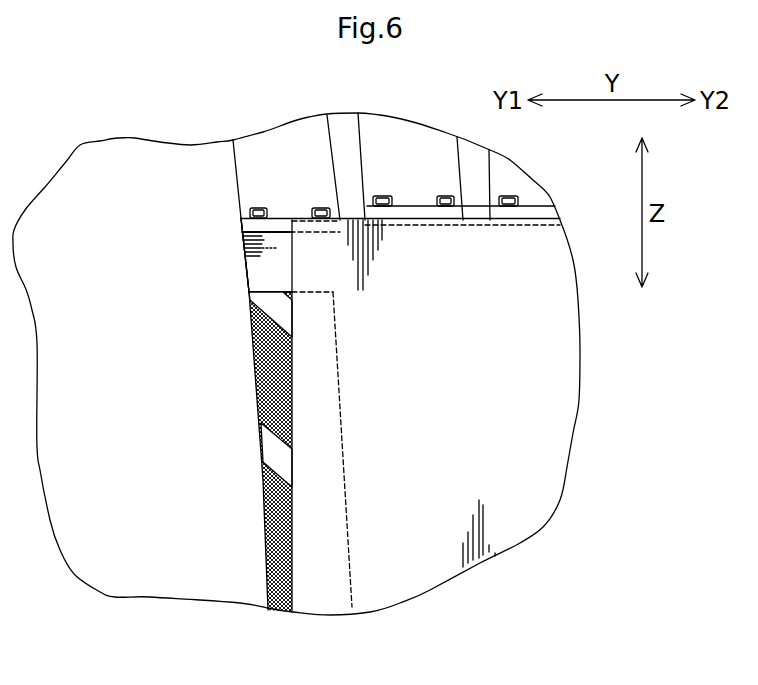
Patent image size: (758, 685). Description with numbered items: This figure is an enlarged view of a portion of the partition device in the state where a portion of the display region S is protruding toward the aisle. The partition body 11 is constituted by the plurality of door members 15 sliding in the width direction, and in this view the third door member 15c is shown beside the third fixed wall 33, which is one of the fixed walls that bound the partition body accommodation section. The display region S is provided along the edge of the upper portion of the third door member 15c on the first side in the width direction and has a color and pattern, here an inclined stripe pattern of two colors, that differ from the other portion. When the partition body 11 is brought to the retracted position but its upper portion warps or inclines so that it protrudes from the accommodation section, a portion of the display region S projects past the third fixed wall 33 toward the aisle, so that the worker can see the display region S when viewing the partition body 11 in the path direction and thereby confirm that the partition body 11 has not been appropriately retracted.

The third door member 15c is at (268, 281).
The partition body 11 is at (266, 255).
The door member 15 is at (266, 255).
The display region S is at (270, 405).
The third fixed wall 33 is at (532, 468).